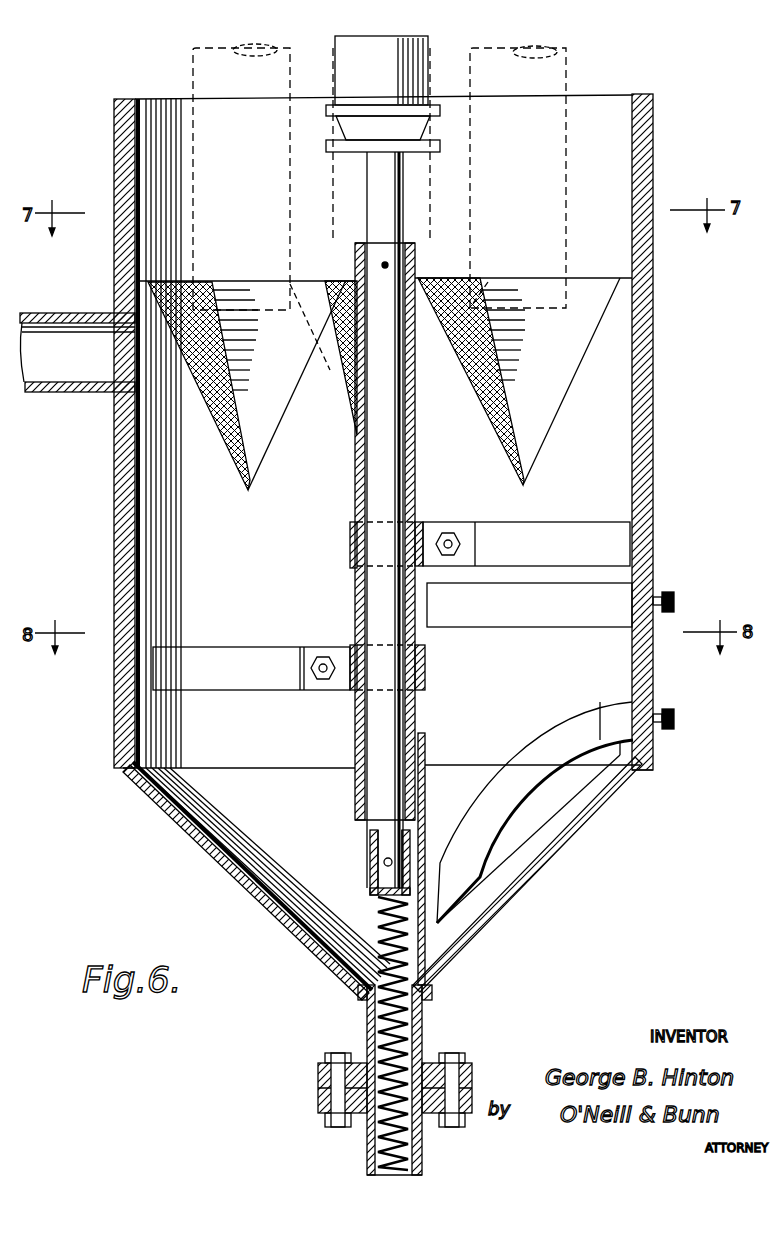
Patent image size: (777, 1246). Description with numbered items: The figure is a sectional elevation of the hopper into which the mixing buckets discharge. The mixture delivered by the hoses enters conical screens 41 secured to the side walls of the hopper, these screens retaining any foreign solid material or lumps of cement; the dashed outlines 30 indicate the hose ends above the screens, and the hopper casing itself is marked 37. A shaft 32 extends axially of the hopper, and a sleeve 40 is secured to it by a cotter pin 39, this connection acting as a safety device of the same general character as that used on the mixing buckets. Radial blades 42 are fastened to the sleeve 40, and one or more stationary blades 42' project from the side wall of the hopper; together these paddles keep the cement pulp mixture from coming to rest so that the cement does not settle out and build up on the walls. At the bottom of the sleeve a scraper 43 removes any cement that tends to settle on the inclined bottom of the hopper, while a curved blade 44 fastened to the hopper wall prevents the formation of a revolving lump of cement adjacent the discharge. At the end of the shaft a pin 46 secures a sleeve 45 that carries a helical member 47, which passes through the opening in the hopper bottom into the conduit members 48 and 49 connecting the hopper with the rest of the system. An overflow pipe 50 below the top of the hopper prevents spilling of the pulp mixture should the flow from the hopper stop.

The separating cylinders 30 is at (332, 52).
The shaft 32 is at (402, 208).
The casing 37 is at (655, 455).
The cotter pin 39 is at (388, 264).
The sleeve 40 is at (416, 272).
The conical screens 41 is at (290, 415).
The radial blades 42 is at (391, 590).
The stationary blades 42' is at (529, 618).
The scraper 43 is at (432, 765).
The curved blade 44 is at (560, 720).
The sleeve 45 is at (372, 868).
The pin 46 is at (386, 860).
The helical member 47 is at (380, 920).
The conduit member 48 is at (430, 1037).
The conduit member 49 is at (424, 1145).
The overflow pipe 50 is at (68, 385).